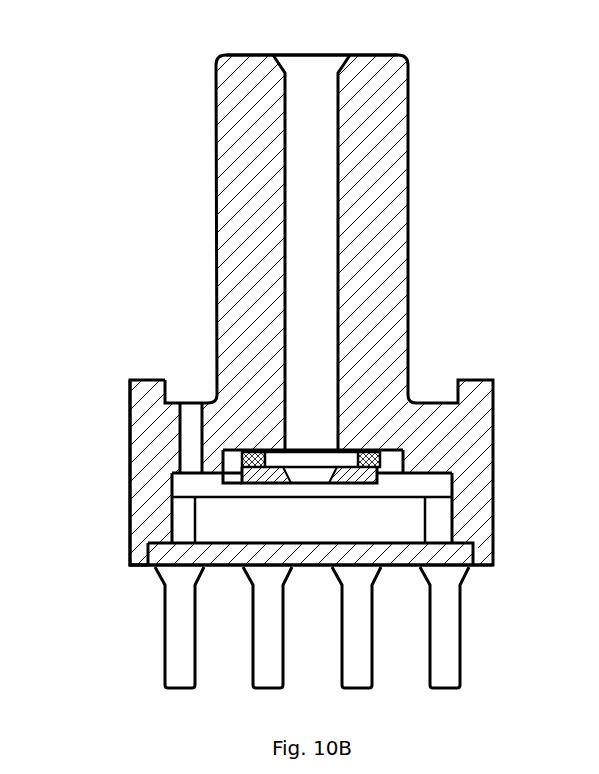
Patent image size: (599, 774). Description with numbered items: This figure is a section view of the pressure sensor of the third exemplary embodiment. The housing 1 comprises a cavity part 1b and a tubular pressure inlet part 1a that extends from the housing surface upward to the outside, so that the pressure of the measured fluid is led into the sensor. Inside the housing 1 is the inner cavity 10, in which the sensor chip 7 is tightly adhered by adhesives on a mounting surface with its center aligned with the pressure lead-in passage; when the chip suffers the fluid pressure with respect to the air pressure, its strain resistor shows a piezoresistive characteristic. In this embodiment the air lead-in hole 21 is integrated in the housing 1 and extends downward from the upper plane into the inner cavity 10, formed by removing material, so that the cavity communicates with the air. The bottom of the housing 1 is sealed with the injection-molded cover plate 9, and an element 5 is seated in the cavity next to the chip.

The housing 1 is at (316, 96).
The tubular pressure inlet part 1a is at (407, 63).
The cavity part 1b is at (160, 436).
The inner cavity 10 is at (440, 402).
The air lead-in hole 21 is at (193, 415).
The bearing 5 is at (378, 456).
The sensor chip 7 is at (378, 483).
The cover plate 9 is at (478, 562).